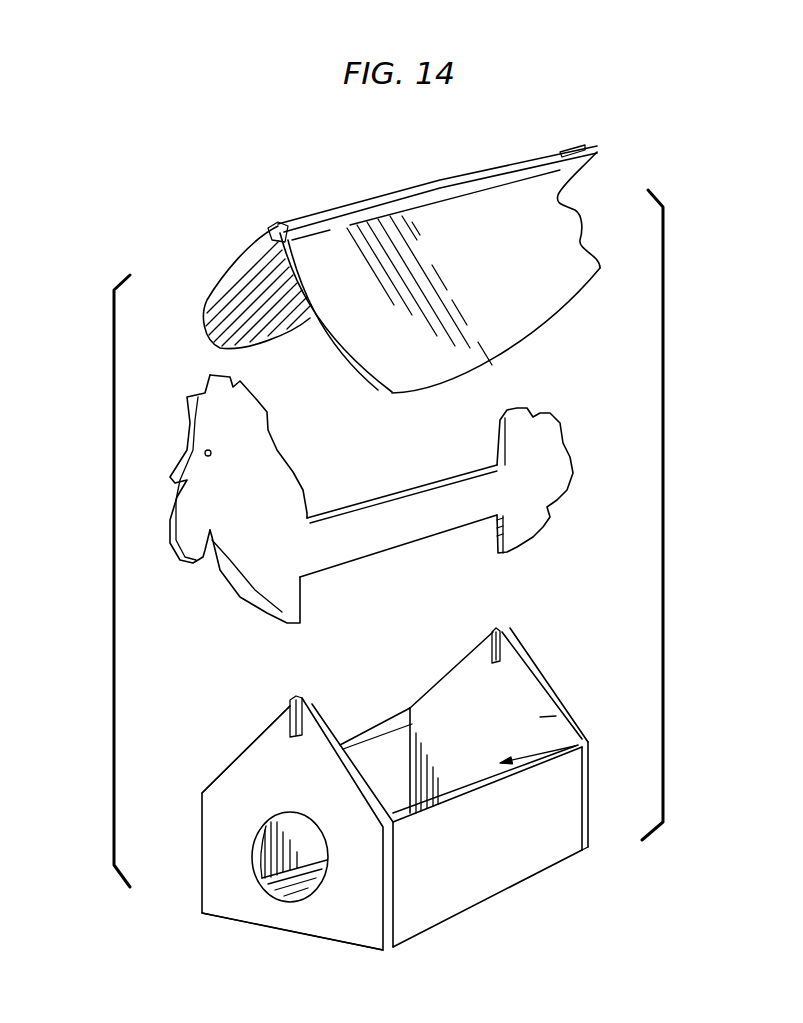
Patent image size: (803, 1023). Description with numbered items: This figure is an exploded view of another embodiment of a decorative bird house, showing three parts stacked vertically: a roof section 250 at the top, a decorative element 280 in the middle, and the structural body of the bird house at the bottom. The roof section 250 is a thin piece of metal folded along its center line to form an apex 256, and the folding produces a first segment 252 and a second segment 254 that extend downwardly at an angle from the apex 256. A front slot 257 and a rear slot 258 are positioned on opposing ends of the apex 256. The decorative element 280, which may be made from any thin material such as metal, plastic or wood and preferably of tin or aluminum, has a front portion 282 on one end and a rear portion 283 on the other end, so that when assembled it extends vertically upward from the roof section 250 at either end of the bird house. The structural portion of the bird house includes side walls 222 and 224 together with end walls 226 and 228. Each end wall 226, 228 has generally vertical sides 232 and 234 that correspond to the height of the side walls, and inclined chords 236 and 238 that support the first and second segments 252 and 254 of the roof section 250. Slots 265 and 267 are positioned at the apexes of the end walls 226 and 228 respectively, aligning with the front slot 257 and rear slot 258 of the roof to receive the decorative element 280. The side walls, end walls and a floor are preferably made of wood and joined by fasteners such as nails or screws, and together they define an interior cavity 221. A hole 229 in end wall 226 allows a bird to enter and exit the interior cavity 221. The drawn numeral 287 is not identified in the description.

The interior cavity 221 is at (575, 746).
The side wall 222 is at (370, 743).
The side wall 224 is at (517, 845).
The end wall 226 is at (353, 922).
The end wall 228 is at (540, 717).
The hole 229 is at (262, 873).
The vertical side 232 is at (202, 872).
The vertical side 234 is at (400, 903).
The inclined chord 236 is at (245, 750).
The inclined chord 238 is at (327, 730).
The roof section 250 is at (412, 247).
The first segment 252 is at (250, 300).
The second segment 254 is at (603, 210).
The apex 256 is at (503, 170).
The front slot 257 is at (275, 232).
The rear slot 258 is at (588, 140).
The slot 265 is at (290, 705).
The slot 267 is at (500, 630).
The decorative element 280 is at (317, 510).
The front portion 282 is at (203, 557).
The rear portion 283 is at (547, 500).
The ornament connecting bar 287 is at (375, 542).